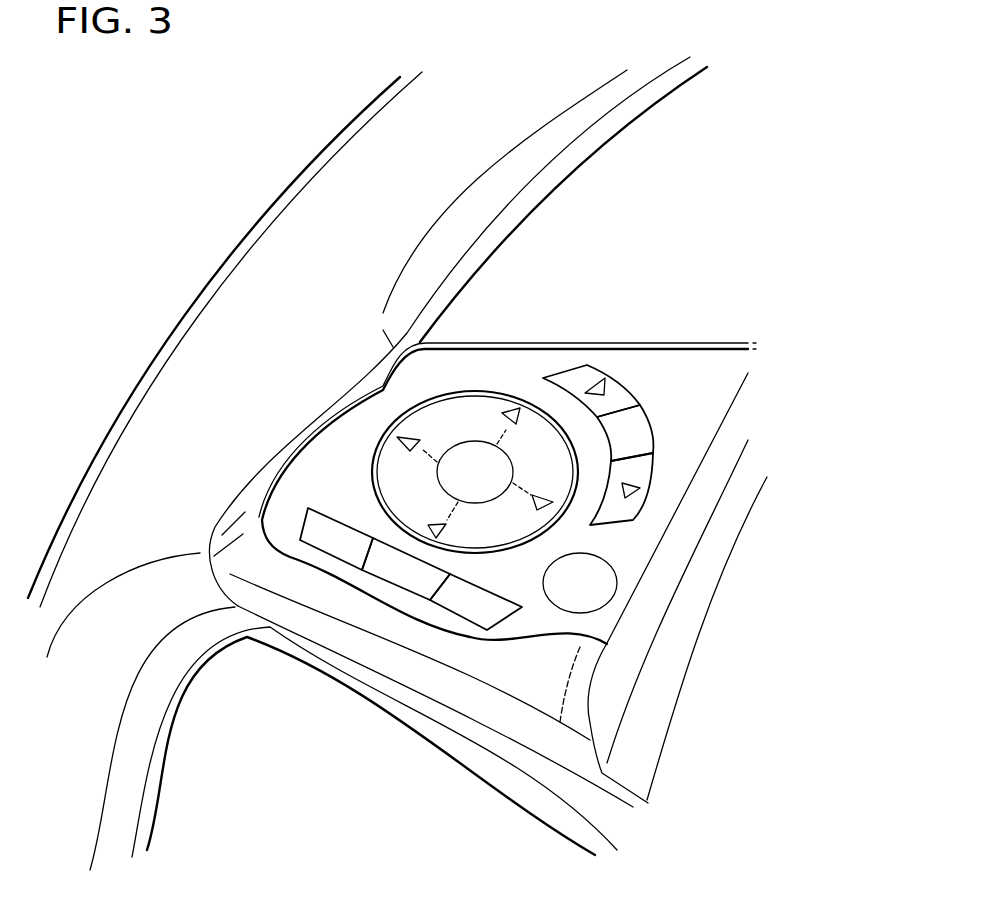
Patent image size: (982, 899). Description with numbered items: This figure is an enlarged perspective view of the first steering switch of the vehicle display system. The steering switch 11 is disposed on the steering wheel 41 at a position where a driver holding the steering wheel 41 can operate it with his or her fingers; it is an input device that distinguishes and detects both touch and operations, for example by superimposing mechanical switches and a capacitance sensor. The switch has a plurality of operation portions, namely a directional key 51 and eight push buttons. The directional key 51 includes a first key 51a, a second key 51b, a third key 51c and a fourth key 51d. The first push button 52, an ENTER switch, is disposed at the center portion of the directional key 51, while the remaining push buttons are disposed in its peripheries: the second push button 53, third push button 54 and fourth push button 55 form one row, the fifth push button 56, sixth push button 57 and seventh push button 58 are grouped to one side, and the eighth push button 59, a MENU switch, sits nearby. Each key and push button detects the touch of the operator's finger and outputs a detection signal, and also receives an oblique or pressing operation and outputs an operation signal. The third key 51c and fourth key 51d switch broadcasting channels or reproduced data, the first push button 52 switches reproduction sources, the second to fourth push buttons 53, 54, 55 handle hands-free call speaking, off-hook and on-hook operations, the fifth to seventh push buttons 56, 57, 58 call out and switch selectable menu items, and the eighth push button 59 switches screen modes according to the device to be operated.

The steering wheel 41 is at (337, 133).
The steering switch 11 is at (846, 119).
The directional key 51 is at (460, 392).
The first key 51a is at (514, 405).
The second key 51b is at (435, 527).
The third key 51c is at (403, 438).
The fourth key 51d is at (552, 498).
The first push button 52 is at (467, 440).
The second push button 53 is at (343, 552).
The third push button 54 is at (402, 577).
The fourth push button 55 is at (460, 610).
The fifth push button 56 is at (612, 391).
The sixth push button 57 is at (632, 436).
The seventh push button 58 is at (641, 478).
The eighth push button 59 is at (603, 569).